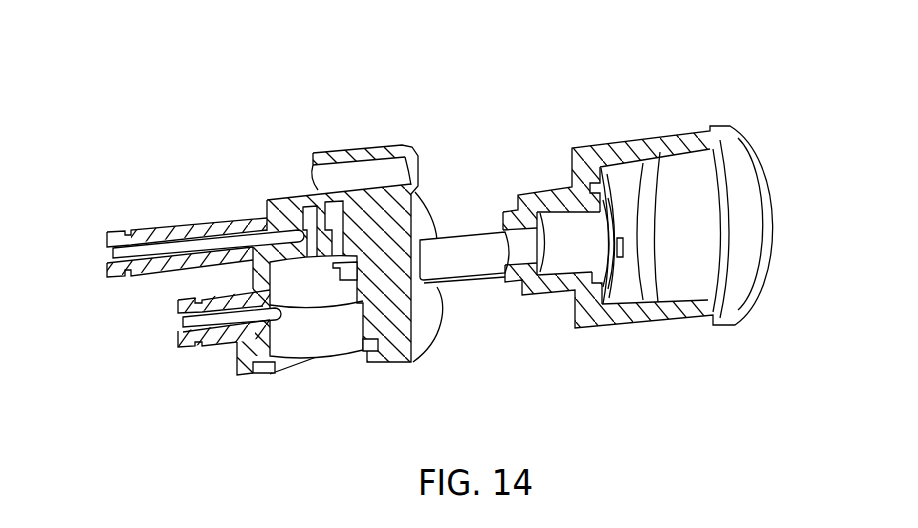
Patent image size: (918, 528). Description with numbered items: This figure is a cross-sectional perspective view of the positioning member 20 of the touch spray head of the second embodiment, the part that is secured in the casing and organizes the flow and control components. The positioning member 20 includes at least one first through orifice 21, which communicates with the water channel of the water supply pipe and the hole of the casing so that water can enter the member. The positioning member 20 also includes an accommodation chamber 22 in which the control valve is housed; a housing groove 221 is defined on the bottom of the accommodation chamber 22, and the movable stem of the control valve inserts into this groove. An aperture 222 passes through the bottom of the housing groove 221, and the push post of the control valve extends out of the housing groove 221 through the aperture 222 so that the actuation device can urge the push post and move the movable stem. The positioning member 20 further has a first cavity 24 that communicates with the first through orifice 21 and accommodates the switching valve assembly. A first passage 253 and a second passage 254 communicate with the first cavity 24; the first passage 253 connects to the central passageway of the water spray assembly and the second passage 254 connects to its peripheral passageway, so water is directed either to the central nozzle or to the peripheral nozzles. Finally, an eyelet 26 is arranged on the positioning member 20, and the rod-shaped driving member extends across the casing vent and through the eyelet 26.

The positioning member 20 is at (442, 221).
The first through orifice 21 is at (622, 247).
The accommodation chamber 22 is at (722, 212).
The housing groove 221 is at (578, 256).
The aperture 222 is at (520, 256).
The first cavity 24 is at (332, 333).
The eyelet 26 is at (405, 171).
The first passage 253 is at (120, 253).
The second passage 254 is at (193, 324).